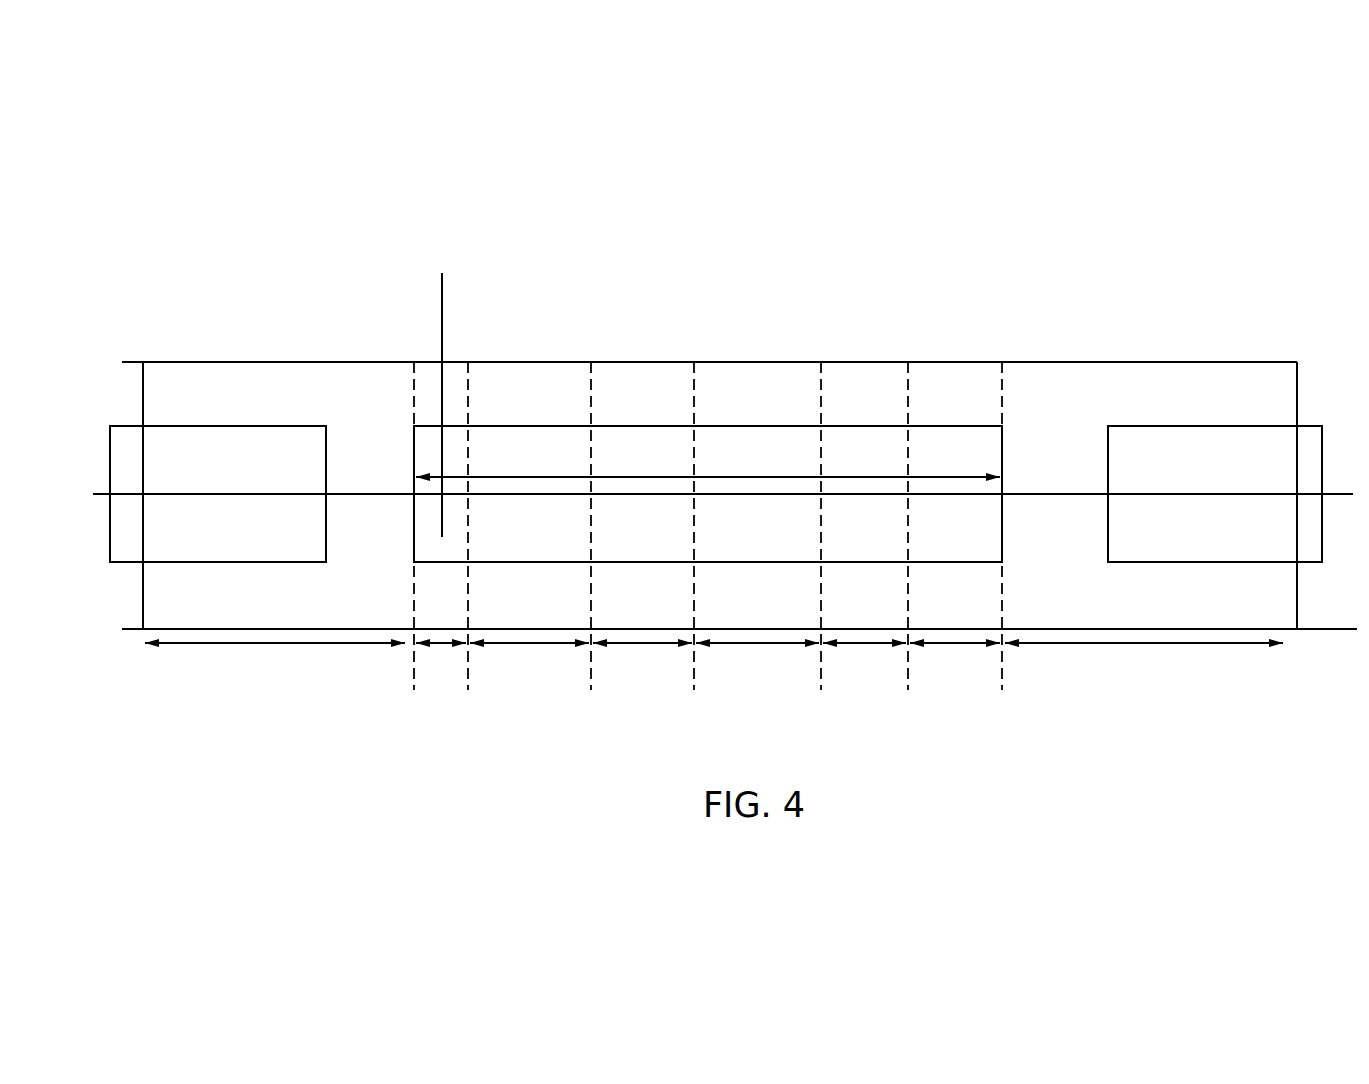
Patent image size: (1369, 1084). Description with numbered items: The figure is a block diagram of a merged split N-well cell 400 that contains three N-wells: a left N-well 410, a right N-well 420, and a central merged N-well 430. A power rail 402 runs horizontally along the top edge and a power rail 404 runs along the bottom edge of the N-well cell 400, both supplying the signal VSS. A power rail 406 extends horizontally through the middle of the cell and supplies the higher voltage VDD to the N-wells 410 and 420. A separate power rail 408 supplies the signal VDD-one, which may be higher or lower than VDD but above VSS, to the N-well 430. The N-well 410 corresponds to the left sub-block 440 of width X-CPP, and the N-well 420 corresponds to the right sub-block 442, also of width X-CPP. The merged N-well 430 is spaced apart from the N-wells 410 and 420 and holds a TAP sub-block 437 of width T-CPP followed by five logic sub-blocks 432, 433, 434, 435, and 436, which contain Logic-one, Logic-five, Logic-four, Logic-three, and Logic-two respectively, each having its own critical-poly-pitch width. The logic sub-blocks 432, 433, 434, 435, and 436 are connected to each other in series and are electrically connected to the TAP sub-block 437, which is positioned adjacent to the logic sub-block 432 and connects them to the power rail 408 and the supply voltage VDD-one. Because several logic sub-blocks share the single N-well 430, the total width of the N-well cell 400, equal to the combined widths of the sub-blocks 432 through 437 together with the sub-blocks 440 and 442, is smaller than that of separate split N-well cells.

The N-well cell 400 is at (282, 220).
The power rail 402 is at (212, 360).
The power rail 404 is at (1327, 630).
The power rail 406 is at (1060, 495).
The power rail 408 is at (443, 317).
The N-well 410 is at (260, 466).
The N-well 420 is at (1129, 472).
The N-well 430 is at (947, 425).
The logic sub-block 432 is at (528, 644).
The logic sub-block 433 is at (642, 644).
The logic sub-block 434 is at (757, 644).
The logic sub-block 435 is at (867, 644).
The logic sub-block 436 is at (955, 644).
The TAP sub-block 437 is at (446, 644).
The sub-block (X-CPP) 440 is at (275, 644).
The right sub-block (X-CPP) 442 is at (1145, 644).